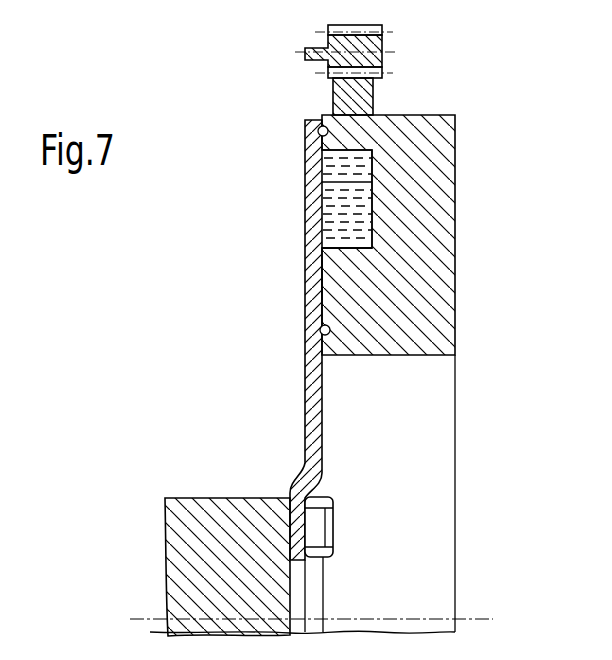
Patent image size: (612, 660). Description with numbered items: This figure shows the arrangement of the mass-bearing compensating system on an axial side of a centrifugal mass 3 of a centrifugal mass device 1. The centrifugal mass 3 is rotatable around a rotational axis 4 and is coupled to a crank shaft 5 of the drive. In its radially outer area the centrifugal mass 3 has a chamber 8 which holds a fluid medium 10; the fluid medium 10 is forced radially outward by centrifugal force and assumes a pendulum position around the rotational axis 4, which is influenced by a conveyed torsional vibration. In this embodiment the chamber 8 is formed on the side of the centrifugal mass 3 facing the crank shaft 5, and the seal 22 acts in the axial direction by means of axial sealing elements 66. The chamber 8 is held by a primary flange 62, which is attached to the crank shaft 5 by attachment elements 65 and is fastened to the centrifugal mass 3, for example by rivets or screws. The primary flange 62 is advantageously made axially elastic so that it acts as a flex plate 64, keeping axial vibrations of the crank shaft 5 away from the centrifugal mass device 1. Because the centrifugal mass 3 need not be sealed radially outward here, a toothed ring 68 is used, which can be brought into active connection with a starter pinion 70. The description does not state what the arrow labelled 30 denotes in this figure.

The centrifugal mass device 1 is at (462, 298).
The centrifugal mass 3 is at (447, 233).
The rotational axis 4 is at (493, 619).
The crank shaft 5 is at (198, 502).
The chamber 8 is at (333, 262).
The fluid medium 10 is at (338, 203).
The seal 22 is at (303, 163).
The channel 30 is at (362, 293).
The primary flange 62 is at (310, 372).
The flex plate 64 is at (315, 283).
The attachment elements 65 is at (333, 525).
The axial sealing elements 66 is at (318, 129).
The toothed ring 68 is at (343, 98).
The starter pinion 70 is at (322, 53).